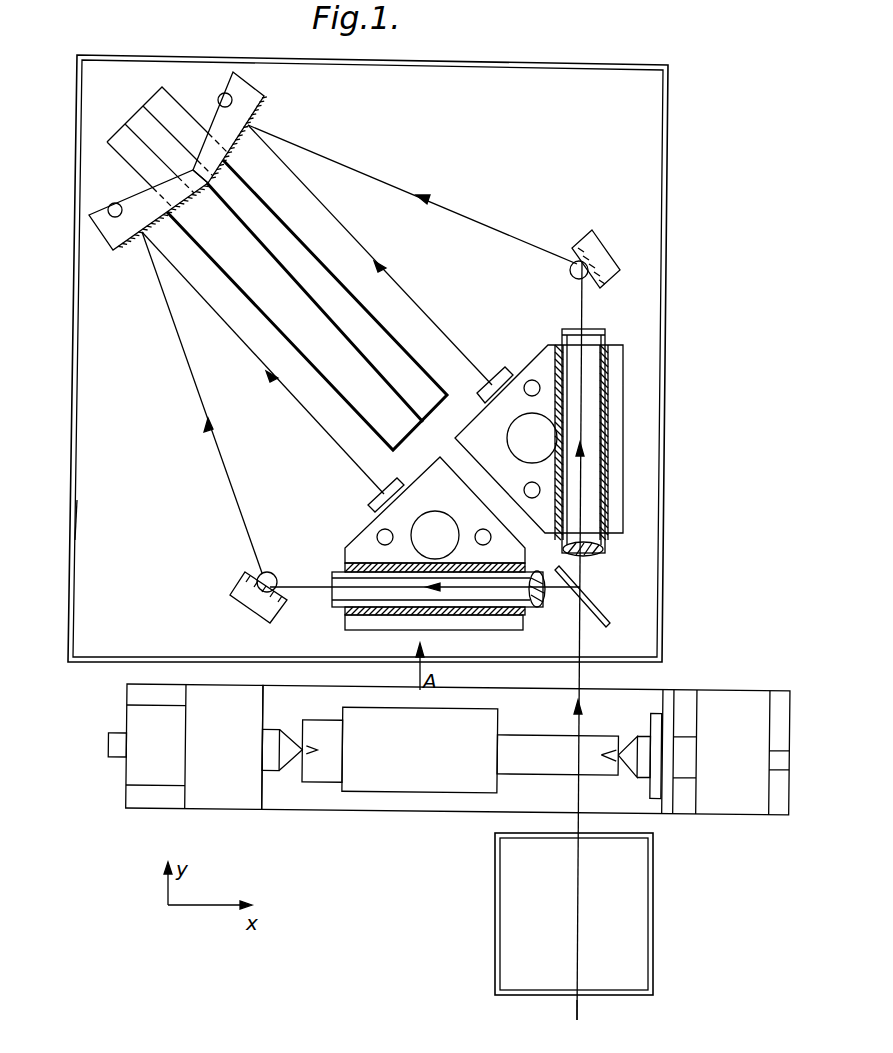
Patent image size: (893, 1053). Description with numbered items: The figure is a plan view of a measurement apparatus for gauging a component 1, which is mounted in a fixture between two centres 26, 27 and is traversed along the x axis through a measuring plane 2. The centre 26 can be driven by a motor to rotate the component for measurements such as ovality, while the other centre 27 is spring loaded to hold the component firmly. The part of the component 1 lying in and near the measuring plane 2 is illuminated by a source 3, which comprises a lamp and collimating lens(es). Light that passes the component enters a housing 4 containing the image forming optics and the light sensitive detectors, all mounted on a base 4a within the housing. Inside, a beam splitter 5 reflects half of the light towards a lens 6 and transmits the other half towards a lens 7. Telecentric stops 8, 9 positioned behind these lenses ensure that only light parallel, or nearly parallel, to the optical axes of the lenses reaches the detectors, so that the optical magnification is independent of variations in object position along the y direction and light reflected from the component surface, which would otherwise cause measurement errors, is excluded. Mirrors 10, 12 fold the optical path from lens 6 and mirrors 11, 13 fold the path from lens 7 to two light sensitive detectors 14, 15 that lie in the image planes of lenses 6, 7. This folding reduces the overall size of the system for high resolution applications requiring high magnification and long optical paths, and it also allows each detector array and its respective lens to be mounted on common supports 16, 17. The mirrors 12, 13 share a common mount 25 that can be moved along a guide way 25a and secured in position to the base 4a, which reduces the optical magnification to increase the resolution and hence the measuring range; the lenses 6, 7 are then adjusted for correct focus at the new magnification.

The component 1 is at (410, 778).
The measuring plane 2 is at (578, 1010).
The source 3 is at (495, 917).
The housing 4 is at (100, 664).
The base 4a is at (112, 518).
The beam splitter 5 is at (605, 600).
The lens 6 is at (541, 607).
The lens 7 is at (600, 553).
The telecentric stop 8 is at (330, 576).
The telecentric stop 9 is at (586, 330).
The mirror 10 is at (283, 606).
The mirror 11 is at (583, 244).
The mirror 12 is at (180, 207).
The mirror 13 is at (230, 162).
The light sensitive detector 14 is at (371, 506).
The light sensitive detector 15 is at (507, 370).
The common support 16 is at (440, 478).
The common support 17 is at (478, 425).
The common mount 25 is at (153, 102).
The guide way 25a is at (283, 333).
The centre 26 is at (252, 802).
The centre 27 is at (718, 808).